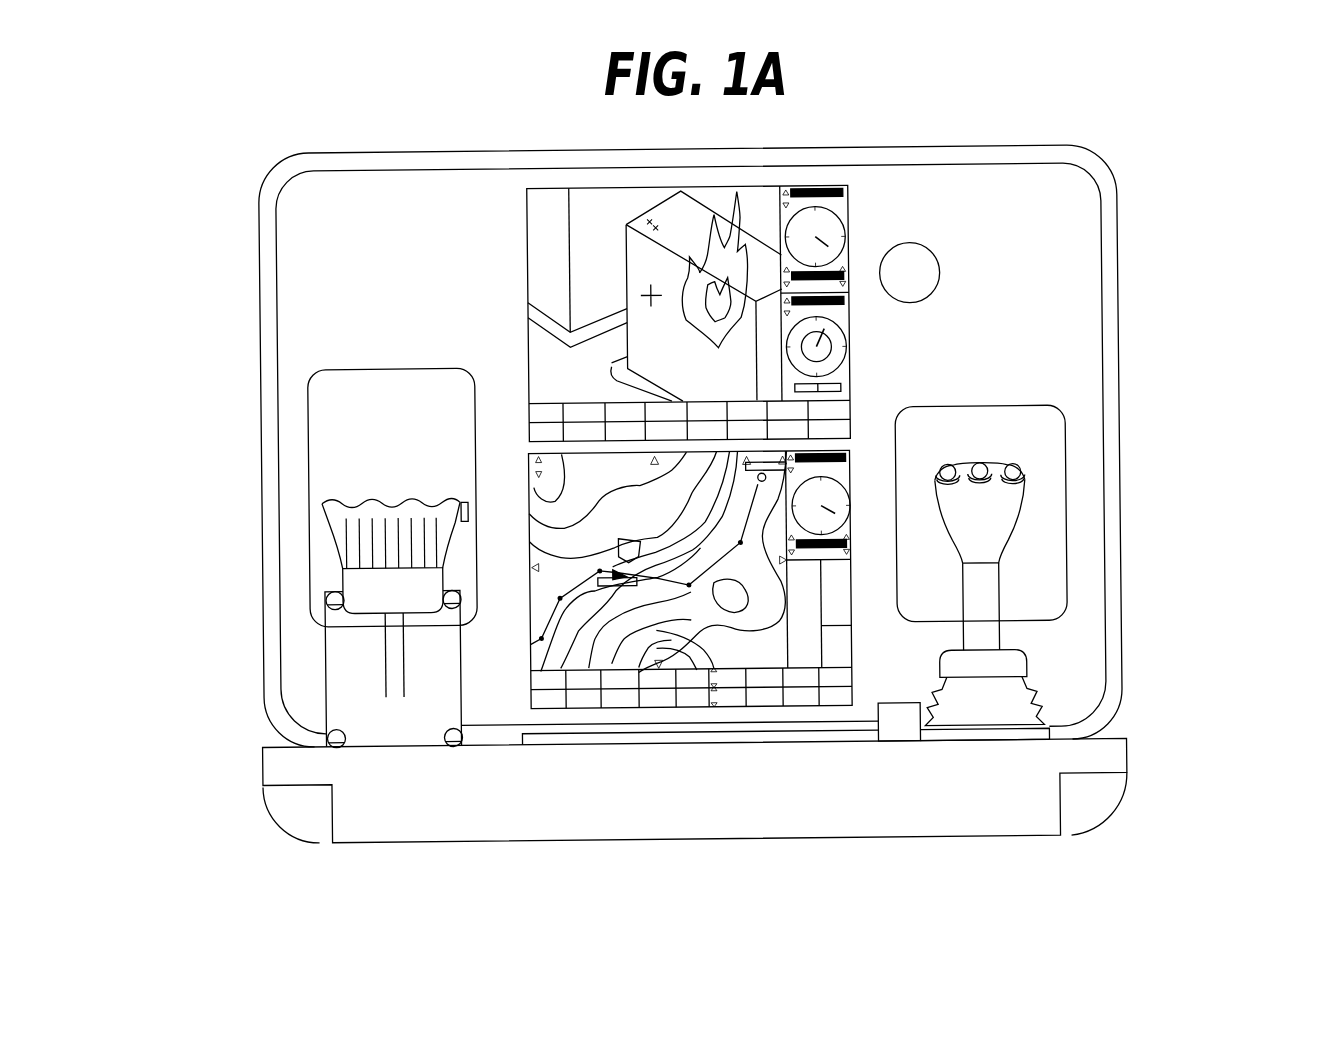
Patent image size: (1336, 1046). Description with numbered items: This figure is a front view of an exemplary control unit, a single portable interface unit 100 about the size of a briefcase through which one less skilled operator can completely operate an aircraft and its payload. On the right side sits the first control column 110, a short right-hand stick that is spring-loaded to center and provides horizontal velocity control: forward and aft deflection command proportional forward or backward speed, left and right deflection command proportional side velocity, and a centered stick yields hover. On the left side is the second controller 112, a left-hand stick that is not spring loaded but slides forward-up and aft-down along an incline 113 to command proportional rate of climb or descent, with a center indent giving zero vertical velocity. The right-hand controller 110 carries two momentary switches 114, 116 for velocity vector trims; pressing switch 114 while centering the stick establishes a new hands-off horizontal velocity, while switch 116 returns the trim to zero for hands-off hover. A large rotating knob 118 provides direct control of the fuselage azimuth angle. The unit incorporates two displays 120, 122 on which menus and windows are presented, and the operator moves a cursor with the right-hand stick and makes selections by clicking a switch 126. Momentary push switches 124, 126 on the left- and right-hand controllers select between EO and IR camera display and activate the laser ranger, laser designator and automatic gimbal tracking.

The interface unit 100 is at (1165, 765).
The first control column 110 is at (987, 593).
The second controller 112 is at (391, 662).
The incline 113 is at (358, 639).
The momentary switch 114 is at (948, 467).
The momentary switch 116 is at (980, 466).
The rotating knob 118 is at (899, 729).
The display 120 is at (527, 476).
The display 122 is at (520, 276).
The push switch 124 is at (469, 508).
The push switch 126 is at (1013, 467).